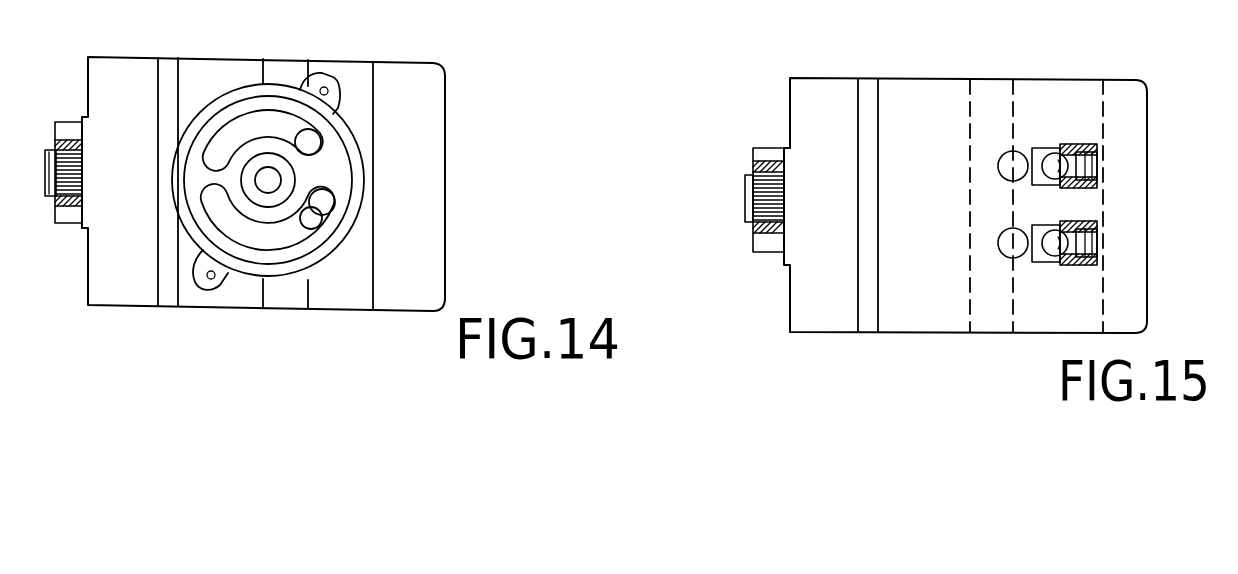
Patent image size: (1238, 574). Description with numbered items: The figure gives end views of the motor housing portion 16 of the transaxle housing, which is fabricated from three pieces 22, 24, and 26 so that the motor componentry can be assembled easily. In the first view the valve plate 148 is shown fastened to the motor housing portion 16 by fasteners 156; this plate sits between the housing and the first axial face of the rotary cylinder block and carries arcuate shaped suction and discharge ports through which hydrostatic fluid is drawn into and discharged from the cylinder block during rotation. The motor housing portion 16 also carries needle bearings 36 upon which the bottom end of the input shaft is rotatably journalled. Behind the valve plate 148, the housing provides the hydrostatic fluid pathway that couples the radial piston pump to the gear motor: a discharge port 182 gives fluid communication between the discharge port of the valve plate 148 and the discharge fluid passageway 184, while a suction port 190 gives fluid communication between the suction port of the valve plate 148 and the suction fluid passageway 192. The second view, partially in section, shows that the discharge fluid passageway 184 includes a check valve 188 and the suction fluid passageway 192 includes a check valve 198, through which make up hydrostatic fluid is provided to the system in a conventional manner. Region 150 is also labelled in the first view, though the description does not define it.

In FIG. 14, the motor housing portion 16 is at (452, 77).
In FIG. 15, the motor housing portion 16 is at (937, 75).
In FIG. 14, the piece of motor housing portion 22 is at (120, 68).
In FIG. 15, the piece of motor housing portion 22 is at (825, 92).
In FIG. 14, the piece of motor housing portion 24 is at (172, 68).
In FIG. 15, the piece of motor housing portion 24 is at (868, 97).
In FIG. 14, the piece of motor housing portion 26 is at (250, 72).
In FIG. 15, the piece of motor housing portion 26 is at (1042, 97).
In FIG. 14, the needle bearings 36 is at (243, 190).
In FIG. 14, the valve plate 148 is at (337, 127).
In FIG. 14, the end compartment 150 is at (437, 215).
In FIG. 14, the fasteners 156 is at (323, 86).
In FIG. 14, the discharge port 182 is at (333, 160).
In FIG. 15, the discharge fluid passageway 184 is at (1010, 163).
In FIG. 15, the check valve 188 is at (1075, 145).
In FIG. 14, the suction port 190 is at (303, 222).
In FIG. 14, the suction fluid passageway 192 is at (298, 220).
In FIG. 15, the check valve 198 is at (1068, 268).